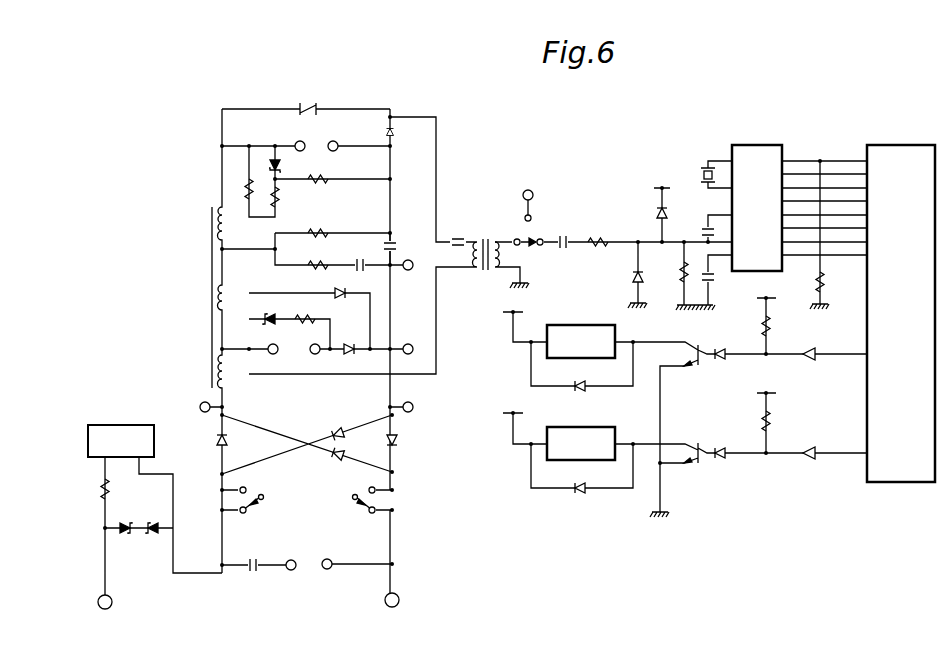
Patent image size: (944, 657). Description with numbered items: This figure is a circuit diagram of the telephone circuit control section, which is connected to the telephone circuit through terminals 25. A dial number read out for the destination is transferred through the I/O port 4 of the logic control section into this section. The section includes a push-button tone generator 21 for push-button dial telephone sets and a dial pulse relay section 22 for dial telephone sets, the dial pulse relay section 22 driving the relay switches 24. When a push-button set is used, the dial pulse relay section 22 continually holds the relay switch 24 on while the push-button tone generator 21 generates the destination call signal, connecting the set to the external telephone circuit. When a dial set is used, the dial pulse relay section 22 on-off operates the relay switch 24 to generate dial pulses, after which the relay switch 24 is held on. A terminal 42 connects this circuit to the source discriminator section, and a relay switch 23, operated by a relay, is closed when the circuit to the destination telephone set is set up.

The I/O port 4 is at (888, 145).
The push-button tone generator 21 is at (752, 145).
The dial pulse relay section 22 is at (575, 325).
The relay switch 23 is at (541, 239).
The relay switch 24 is at (343, 512).
The terminal 25 is at (422, 601).
The terminal 42 is at (528, 190).